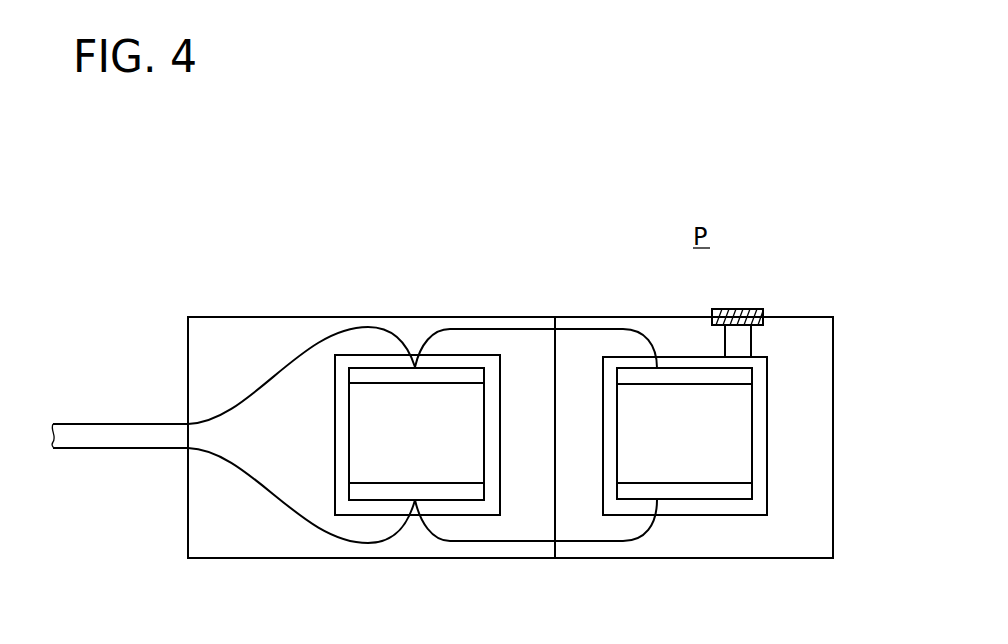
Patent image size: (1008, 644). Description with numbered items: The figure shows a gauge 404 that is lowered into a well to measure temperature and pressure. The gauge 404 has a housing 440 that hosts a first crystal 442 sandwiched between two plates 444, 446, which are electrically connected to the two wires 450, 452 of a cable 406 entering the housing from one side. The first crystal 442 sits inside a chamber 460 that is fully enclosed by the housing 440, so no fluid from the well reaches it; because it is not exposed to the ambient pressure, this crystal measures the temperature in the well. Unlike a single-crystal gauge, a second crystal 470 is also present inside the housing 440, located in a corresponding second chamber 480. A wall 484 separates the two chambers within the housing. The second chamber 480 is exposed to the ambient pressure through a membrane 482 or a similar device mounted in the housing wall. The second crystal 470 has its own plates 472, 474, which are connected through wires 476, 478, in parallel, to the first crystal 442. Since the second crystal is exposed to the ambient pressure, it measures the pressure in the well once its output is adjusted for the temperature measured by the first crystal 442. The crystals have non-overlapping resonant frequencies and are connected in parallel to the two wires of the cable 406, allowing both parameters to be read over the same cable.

The gauge 404 is at (513, 190).
The cable 406 is at (128, 451).
The housing 440 is at (370, 558).
The first crystal 442 is at (463, 407).
The plate 444 is at (467, 377).
The plate 446 is at (362, 493).
The wire 450 is at (282, 370).
The wire 452 is at (258, 480).
The chamber 460 is at (488, 502).
The second crystal 470 is at (738, 441).
The plate 472 is at (743, 375).
The plate 474 is at (710, 495).
The wire 476 is at (576, 328).
The wire 478 is at (576, 542).
The second chamber 480 is at (758, 505).
The membrane 482 is at (740, 310).
The partition wall 484 is at (553, 550).